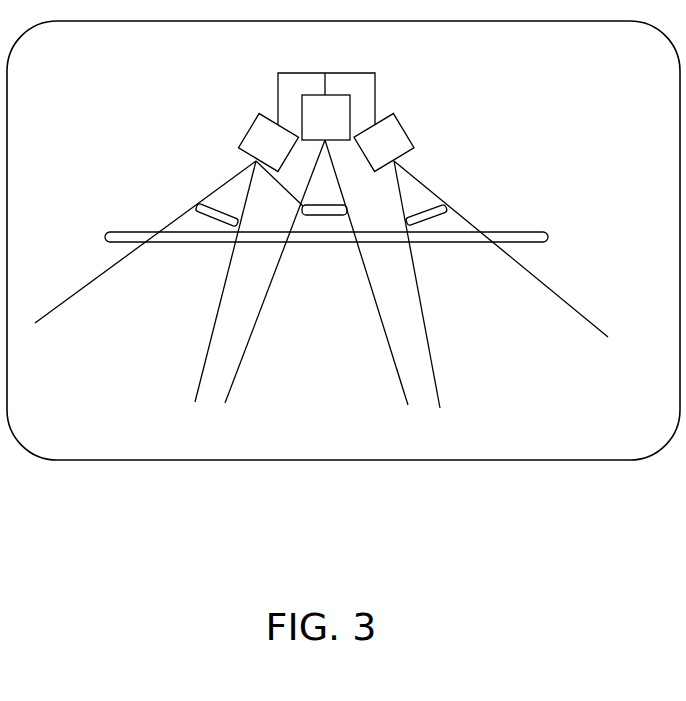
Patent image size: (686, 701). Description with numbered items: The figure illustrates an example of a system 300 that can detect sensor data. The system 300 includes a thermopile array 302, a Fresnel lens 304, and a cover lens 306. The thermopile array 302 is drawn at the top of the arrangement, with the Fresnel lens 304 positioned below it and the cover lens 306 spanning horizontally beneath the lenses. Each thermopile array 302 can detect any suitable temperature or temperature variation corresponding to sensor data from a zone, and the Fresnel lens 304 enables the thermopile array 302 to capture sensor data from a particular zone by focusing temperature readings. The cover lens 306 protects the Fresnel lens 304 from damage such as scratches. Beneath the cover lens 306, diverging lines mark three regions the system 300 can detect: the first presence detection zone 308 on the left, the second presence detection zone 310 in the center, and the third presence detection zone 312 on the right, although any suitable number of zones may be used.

The system 300 is at (300, 594).
The thermopile array 302 is at (307, 72).
The Fresnel lens 304 is at (480, 135).
The cover lens 306 is at (516, 231).
The presence detection zone 1 308 is at (133, 381).
The presence detection zone 2 310 is at (299, 397).
The presence detection zone 3 312 is at (509, 381).